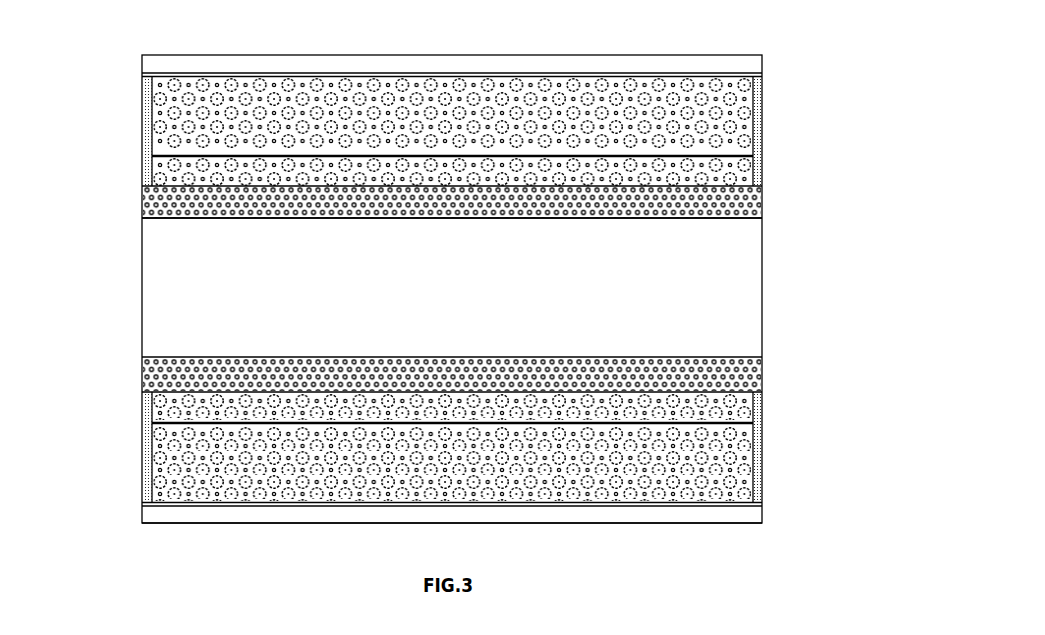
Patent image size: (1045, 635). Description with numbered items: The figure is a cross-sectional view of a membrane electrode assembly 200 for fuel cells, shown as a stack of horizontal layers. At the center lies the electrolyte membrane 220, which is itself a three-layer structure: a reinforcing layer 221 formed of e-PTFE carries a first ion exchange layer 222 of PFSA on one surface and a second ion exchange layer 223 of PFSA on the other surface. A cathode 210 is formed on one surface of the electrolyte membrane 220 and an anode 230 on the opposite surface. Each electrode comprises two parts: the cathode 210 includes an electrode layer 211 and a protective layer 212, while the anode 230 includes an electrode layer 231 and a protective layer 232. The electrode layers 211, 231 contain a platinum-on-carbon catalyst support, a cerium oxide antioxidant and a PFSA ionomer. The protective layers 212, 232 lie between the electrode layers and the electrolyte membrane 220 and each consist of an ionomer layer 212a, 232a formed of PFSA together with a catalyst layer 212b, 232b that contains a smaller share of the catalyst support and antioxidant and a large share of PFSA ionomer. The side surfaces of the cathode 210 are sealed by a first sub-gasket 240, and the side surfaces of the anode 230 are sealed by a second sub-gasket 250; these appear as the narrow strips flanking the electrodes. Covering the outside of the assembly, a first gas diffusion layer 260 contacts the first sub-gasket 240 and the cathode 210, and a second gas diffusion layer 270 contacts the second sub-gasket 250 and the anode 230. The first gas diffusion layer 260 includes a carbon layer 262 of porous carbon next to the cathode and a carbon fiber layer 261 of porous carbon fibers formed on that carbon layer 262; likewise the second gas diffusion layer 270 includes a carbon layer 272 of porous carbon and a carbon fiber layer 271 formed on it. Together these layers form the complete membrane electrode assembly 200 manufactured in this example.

The membrane electrode assembly 200 is at (746, 20).
The cathode 210 is at (539, 134).
The electrode layer 211 is at (735, 110).
The protective layer 212 is at (517, 161).
The ionomer layer 212a is at (747, 153).
The catalyst layer 212b is at (747, 177).
The electrolyte membrane 220 is at (512, 289).
The reinforcing layer 221 is at (750, 295).
The first ion exchange layer 222 is at (750, 205).
The second ion exchange layer 223 is at (488, 375).
The anode 230 is at (539, 446).
The electrode layer 231 is at (747, 480).
The protective layer 232 is at (522, 420).
The ionomer layer 232a is at (747, 430).
The catalyst layer 232b is at (750, 405).
The first sub-gasket 240 is at (148, 128).
The second sub-gasket 250 is at (148, 457).
The first gas diffusion layer 260 is at (389, 65).
The carbon fiber layer 261 is at (148, 62).
The carbon layer 262 is at (143, 73).
The second gas diffusion layer 270 is at (389, 515).
The carbon fiber layer 271 is at (147, 518).
The carbon layer 272 is at (143, 504).